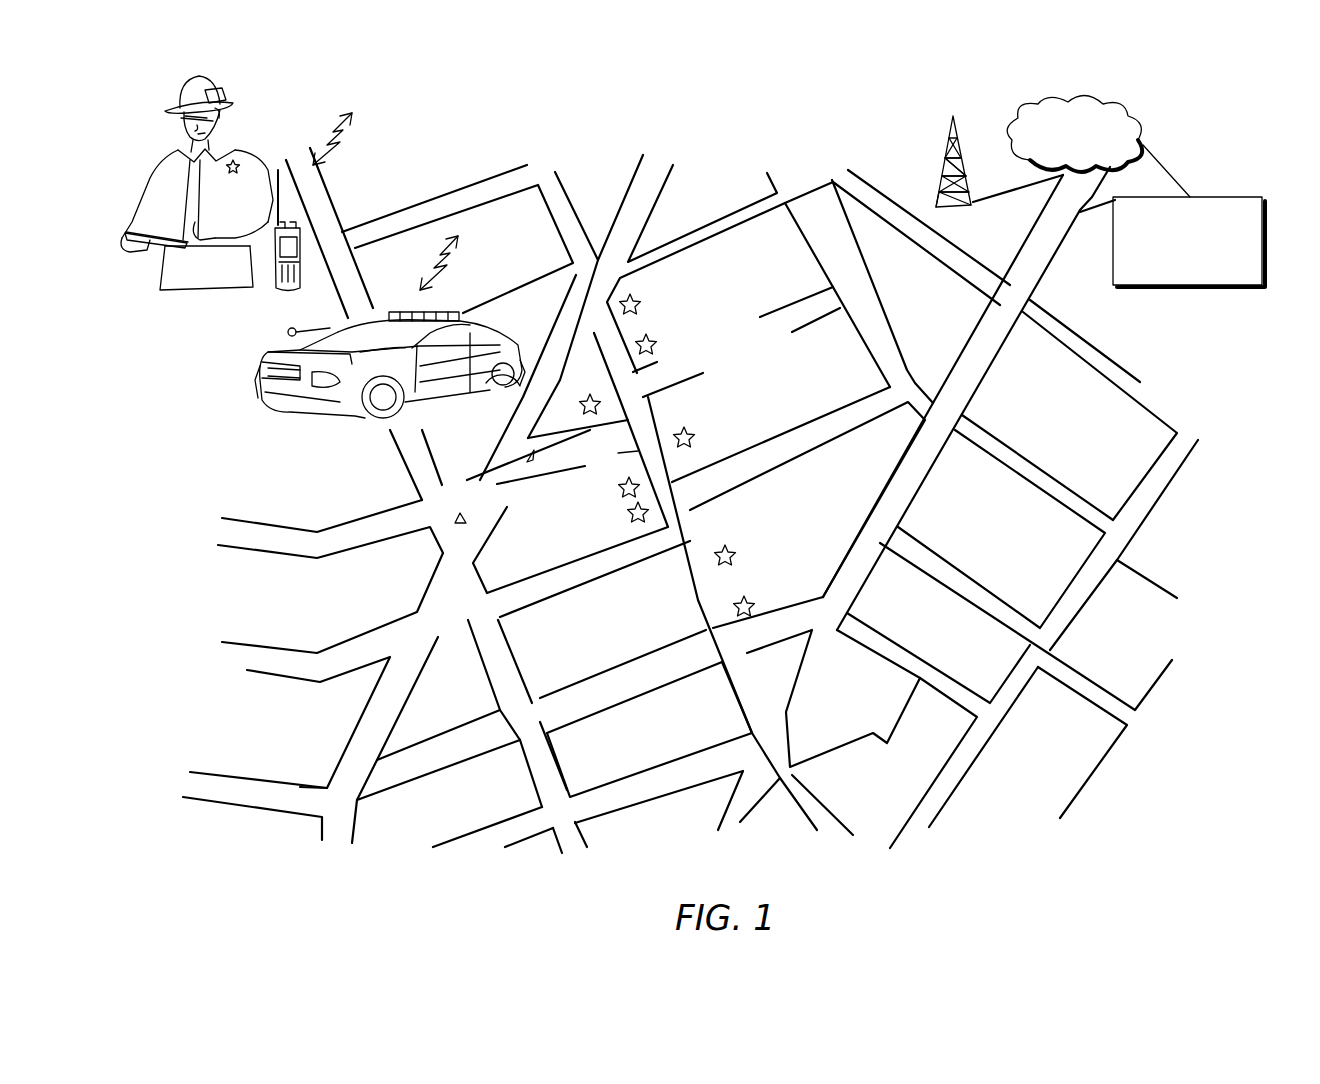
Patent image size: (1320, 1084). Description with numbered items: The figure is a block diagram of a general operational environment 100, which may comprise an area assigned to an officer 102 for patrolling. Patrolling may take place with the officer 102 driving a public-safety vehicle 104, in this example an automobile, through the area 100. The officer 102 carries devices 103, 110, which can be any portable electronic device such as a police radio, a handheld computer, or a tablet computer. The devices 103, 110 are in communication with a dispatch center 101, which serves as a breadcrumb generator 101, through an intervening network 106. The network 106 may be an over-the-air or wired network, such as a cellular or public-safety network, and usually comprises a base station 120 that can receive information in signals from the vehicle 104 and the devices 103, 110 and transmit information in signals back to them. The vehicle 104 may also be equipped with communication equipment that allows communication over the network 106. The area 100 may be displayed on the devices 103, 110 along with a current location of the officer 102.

The operational environment 100 is at (121, 121).
The dispatch center 101 is at (1243, 196).
The officer 102 is at (248, 146).
The device 103 is at (298, 225).
The public-safety vehicle 104 is at (264, 414).
The network 106 is at (1147, 123).
The device 110 is at (153, 259).
The base station 120 is at (947, 144).